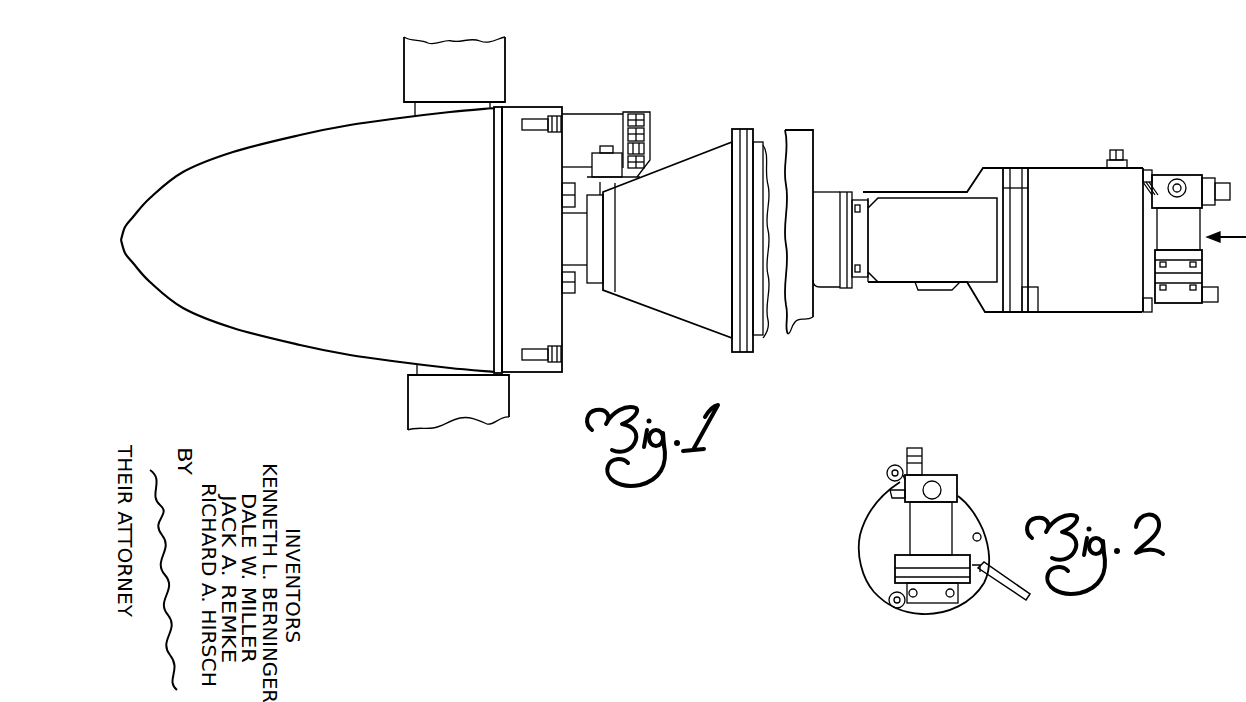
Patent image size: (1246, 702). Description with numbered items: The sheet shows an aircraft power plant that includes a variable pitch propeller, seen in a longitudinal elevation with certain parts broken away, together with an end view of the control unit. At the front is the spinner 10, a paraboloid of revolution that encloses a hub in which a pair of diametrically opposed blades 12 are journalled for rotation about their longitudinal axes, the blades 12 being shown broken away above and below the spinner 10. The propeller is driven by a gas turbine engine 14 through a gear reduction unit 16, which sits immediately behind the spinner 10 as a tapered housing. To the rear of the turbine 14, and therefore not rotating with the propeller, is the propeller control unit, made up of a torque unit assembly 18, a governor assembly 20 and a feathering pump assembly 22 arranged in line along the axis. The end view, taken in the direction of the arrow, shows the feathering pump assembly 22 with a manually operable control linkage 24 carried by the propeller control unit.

In FIG. 1, the spinner 10 is at (360, 345).
In FIG. 1, the blades 12 is at (498, 56).
In FIG. 1, the gas turbine engine 14 is at (808, 141).
In FIG. 1, the gear reduction unit 16 is at (714, 157).
In FIG. 1, the torque unit assembly 18 is at (935, 205).
In FIG. 1, the governor assembly 20 is at (1078, 153).
In FIG. 1, the feathering pump assembly 22 is at (1203, 175).
In FIG. 2, the feathering pump assembly 22 is at (942, 480).
In FIG. 2, the manually operable control linkage 24 is at (1030, 597).